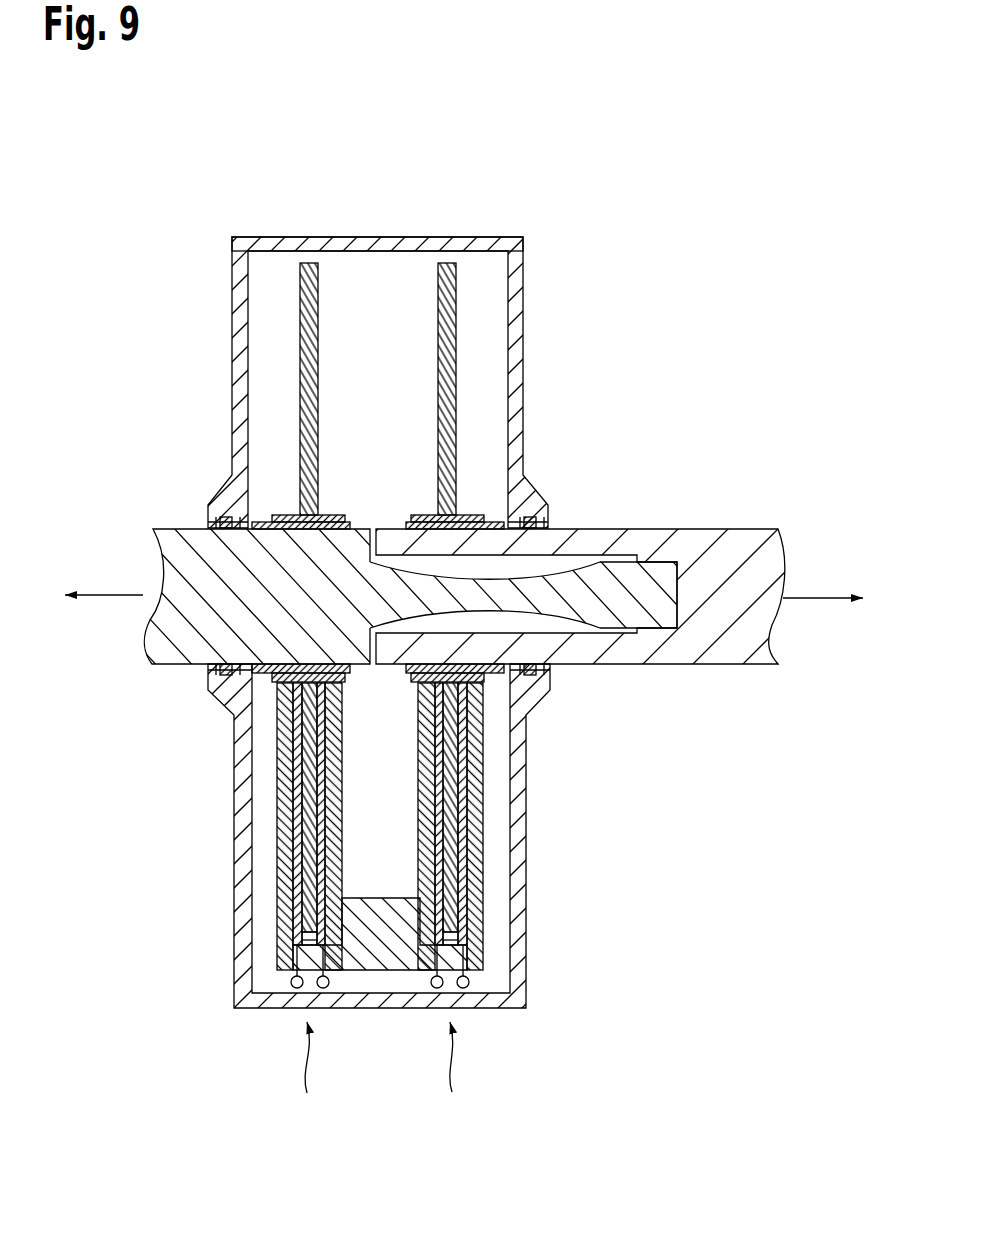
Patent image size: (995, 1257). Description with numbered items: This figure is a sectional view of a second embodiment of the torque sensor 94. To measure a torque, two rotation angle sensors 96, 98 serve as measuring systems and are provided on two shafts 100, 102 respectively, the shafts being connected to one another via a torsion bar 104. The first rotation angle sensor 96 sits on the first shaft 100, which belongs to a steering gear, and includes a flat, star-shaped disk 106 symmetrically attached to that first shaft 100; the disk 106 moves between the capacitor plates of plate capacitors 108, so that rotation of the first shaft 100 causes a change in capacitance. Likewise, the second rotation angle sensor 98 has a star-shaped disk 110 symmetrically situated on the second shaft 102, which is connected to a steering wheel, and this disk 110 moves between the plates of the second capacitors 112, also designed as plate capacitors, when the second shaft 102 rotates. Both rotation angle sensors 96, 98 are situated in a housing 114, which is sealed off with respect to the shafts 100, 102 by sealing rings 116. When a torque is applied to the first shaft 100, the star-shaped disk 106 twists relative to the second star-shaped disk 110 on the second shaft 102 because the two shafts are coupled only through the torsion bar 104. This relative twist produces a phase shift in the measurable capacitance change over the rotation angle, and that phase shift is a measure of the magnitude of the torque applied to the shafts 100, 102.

The torque sensor 94 is at (198, 285).
The first rotation angle sensor 96 is at (308, 1073).
The second rotation angle sensor 98 is at (458, 1073).
The first shaft 100 is at (183, 638).
The second shaft 102 is at (739, 549).
The torsion bar 104 is at (600, 588).
The star-shaped disk 106 is at (305, 338).
The capacitor 108 is at (268, 905).
The star-shaped disk 110 is at (451, 352).
The second capacitor 112 is at (487, 916).
The housing 114 is at (396, 243).
The sealing ring 116 is at (222, 522).